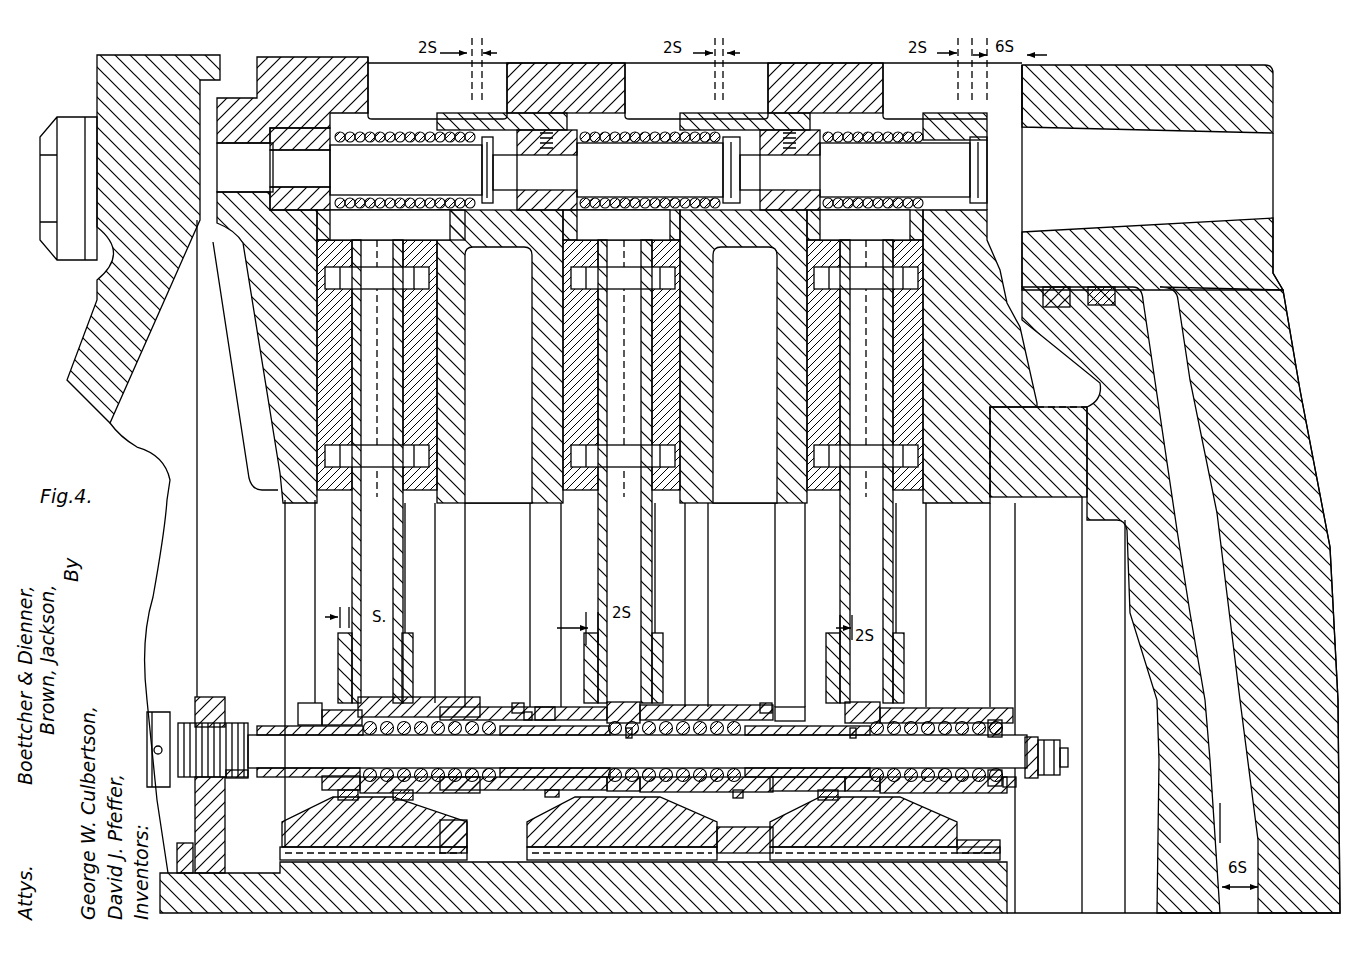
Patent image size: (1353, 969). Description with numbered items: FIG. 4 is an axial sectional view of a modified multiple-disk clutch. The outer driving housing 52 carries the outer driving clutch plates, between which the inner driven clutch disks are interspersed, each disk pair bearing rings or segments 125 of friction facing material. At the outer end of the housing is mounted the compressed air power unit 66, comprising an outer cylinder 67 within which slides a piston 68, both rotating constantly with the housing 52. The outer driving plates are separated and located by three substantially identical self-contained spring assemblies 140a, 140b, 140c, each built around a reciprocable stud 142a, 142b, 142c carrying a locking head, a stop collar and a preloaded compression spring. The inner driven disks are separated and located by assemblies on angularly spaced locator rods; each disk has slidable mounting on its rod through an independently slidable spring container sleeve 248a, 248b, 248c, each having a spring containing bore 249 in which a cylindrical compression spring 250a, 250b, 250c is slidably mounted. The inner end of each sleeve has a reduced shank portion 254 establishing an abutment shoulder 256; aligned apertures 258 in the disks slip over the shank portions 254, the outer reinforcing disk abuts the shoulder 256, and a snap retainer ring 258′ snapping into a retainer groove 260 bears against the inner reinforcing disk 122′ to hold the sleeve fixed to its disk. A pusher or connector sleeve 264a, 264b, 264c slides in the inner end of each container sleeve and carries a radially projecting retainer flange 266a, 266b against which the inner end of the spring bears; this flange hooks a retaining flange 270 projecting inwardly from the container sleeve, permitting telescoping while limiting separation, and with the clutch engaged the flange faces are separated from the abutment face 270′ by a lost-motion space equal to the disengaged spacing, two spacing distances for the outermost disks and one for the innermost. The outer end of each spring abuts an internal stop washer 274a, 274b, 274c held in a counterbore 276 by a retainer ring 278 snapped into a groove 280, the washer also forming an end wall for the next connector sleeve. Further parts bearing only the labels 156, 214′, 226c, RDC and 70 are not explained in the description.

The housing 52 is at (255, 112).
The self-contained spring assembly 140c is at (390, 130).
The self-contained spring assembly 140b is at (630, 133).
The self-contained spring assembly 140a is at (880, 133).
The spring 156 is at (326, 134).
The reciprocable stud 142c is at (420, 193).
The reciprocable stud 142b is at (660, 196).
The reciprocable stud 142a is at (895, 196).
The friction facing ring 125 is at (317, 505).
The inner reinforcing disk 122′ is at (337, 632).
The snap retainer ring 258′ is at (337, 700).
The ring 214′ is at (300, 710).
The retaining flange 270 is at (320, 715).
The washer 226c is at (341, 737).
The reduced shank portion 254 is at (850, 693).
The abutment shoulder 256 is at (900, 830).
The connector sleeve 264c is at (236, 779).
The connector sleeve 264b is at (546, 712).
The connector sleeve 264a is at (809, 736).
The retainer groove 260 is at (335, 797).
The spring containing bore 249 is at (390, 805).
The aligned aperture 258 is at (742, 822).
The compression spring 250c is at (442, 706).
The compression spring 250b is at (718, 722).
The compression spring 250a is at (928, 700).
The counterbore 276 is at (520, 705).
The internal stop washer 274c is at (527, 712).
The internal stop washer 274b is at (748, 735).
The internal stop washer 274a is at (946, 737).
The retainer flange 266b is at (629, 738).
The retainer flange 266a is at (852, 738).
The retainer ring 278 is at (1017, 787).
The groove 280 is at (995, 715).
The spring container sleeve 248c is at (402, 840).
The spring container sleeve 248b is at (622, 843).
The spring container sleeve 248a is at (1000, 800).
The abutment face 270′ is at (557, 793).
The compressed air power unit 66 is at (1277, 258).
The cavity RDC is at (1284, 144).
The outer cylinder 67 is at (1248, 313).
The piston 68 is at (1148, 413).
The wall 70 is at (1192, 453).